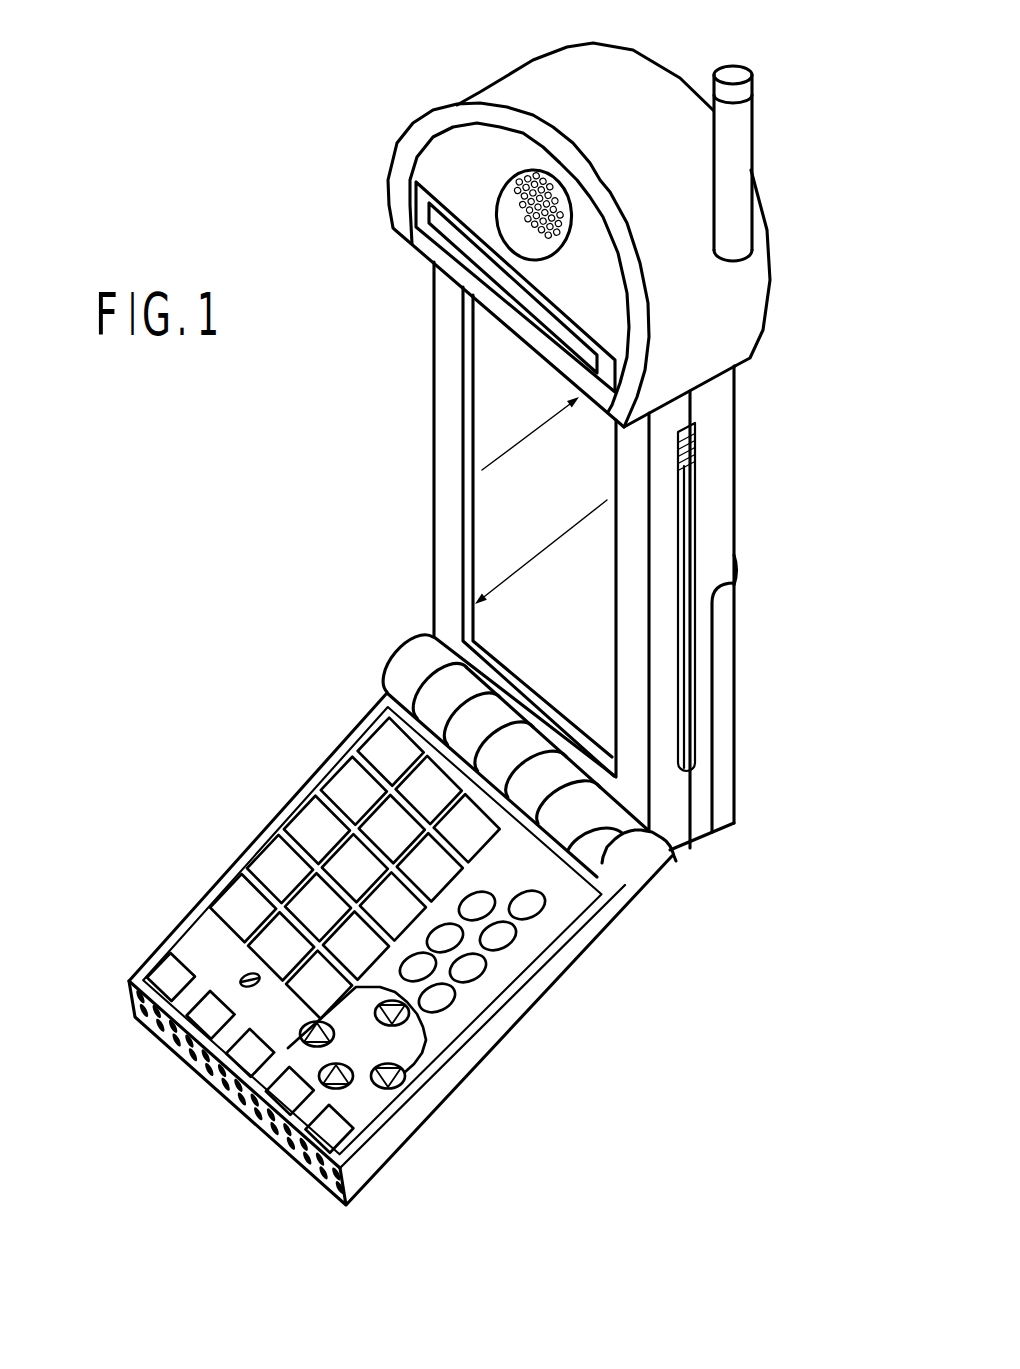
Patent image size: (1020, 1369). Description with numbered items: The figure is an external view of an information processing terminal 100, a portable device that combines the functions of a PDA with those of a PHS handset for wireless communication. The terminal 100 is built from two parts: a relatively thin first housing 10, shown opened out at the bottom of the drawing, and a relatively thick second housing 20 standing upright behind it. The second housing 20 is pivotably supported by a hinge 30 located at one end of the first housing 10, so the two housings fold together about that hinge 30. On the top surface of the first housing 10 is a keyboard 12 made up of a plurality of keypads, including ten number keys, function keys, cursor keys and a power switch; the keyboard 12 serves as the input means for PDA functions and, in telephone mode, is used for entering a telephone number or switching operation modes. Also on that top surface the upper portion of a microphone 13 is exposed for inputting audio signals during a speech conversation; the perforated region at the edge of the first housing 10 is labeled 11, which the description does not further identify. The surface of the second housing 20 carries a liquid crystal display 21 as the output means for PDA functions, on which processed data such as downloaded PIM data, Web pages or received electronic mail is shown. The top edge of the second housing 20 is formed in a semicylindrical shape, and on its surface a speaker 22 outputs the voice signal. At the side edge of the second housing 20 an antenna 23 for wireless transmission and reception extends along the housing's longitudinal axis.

The first housing 10 is at (404, 1150).
The microphone holes 11 is at (237, 1110).
The keyboard 12 is at (288, 797).
The microphone 13 is at (240, 979).
The second housing 20 is at (752, 516).
The liquid crystal display 21 is at (492, 500).
The speaker 22 is at (517, 217).
The antenna 23 is at (740, 158).
The hinge 30 is at (642, 858).
The information processing terminal 100 is at (580, 1040).